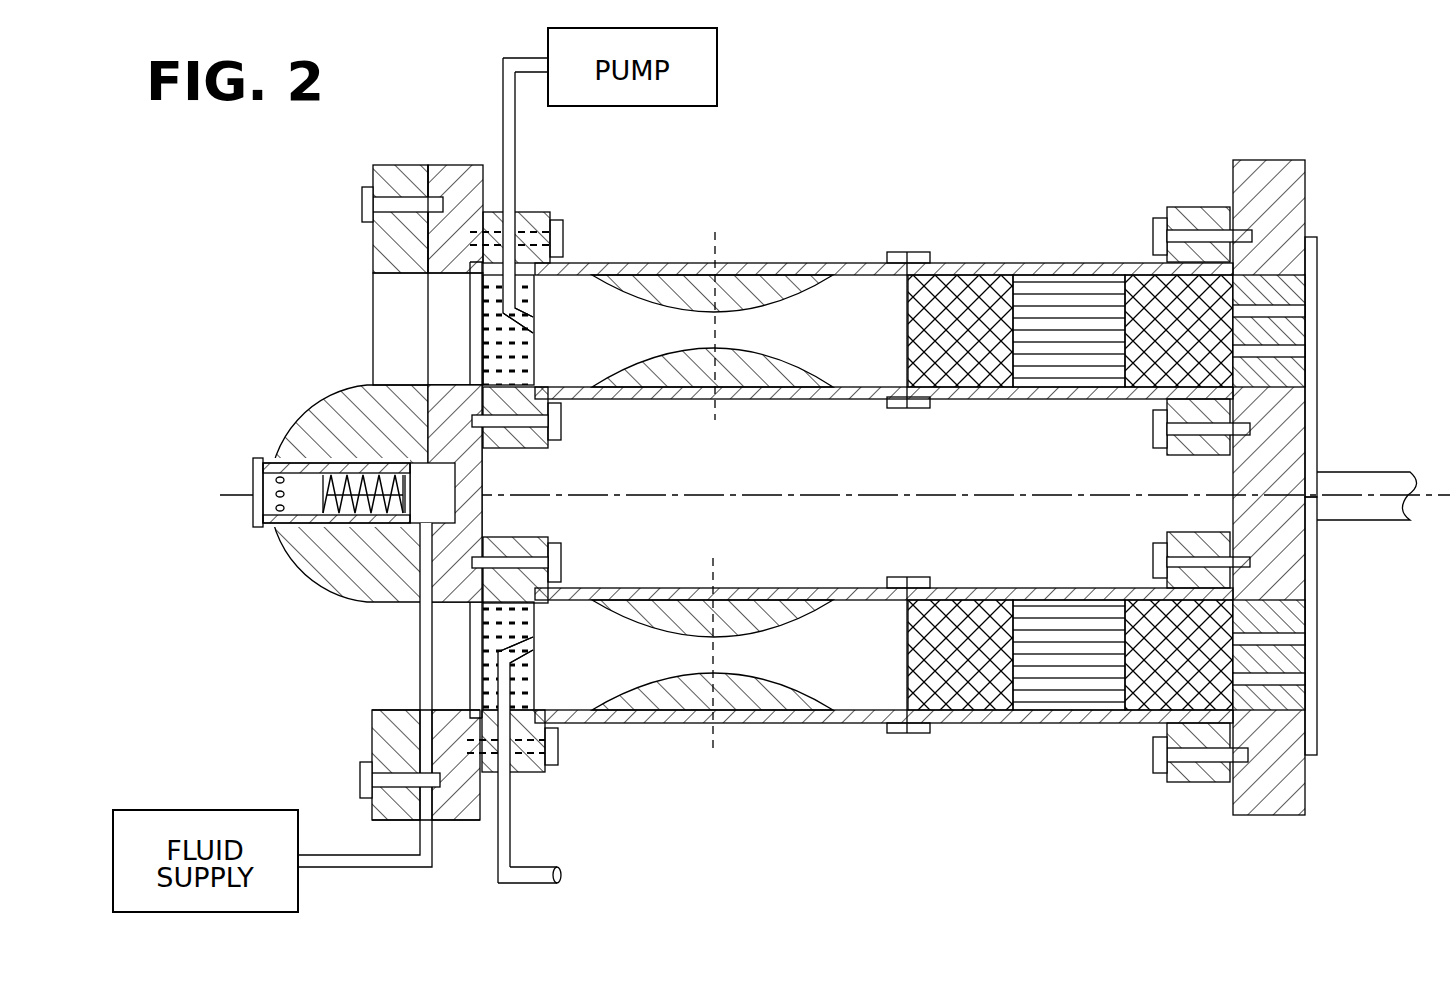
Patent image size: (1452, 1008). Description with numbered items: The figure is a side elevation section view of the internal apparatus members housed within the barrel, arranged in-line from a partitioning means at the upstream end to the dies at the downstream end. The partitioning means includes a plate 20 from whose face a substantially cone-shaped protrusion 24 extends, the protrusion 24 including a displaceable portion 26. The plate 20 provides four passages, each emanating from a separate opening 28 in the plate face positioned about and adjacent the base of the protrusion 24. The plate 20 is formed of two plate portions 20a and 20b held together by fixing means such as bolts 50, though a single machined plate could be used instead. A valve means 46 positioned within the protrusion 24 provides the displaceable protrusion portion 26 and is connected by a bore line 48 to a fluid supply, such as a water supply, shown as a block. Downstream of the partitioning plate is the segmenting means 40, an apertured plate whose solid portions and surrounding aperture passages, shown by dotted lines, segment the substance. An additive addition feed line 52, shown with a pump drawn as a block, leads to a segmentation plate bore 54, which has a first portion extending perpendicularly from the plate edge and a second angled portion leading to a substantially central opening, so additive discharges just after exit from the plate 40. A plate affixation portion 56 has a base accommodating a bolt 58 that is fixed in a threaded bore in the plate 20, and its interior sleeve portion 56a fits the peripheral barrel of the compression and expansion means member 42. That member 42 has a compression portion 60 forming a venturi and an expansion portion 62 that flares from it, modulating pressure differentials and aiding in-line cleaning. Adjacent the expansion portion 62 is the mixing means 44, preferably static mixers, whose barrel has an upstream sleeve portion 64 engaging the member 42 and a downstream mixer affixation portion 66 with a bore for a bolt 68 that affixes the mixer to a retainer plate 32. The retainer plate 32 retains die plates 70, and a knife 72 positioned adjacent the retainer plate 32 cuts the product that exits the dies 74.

The plate 20 is at (372, 712).
The plate portion 20a is at (410, 162).
The plate portion 20b is at (460, 162).
The cone-shaped protrusion 24 is at (313, 548).
The displaceable portion 26 is at (253, 507).
The opening 28 is at (378, 332).
The retainer plate 32 is at (1280, 815).
The segmenting means 40 is at (545, 289).
The compression and expansion means member 42 is at (813, 242).
The mixing means 44 is at (998, 243).
The valve means 46 is at (278, 448).
The bore line 48 is at (430, 837).
The bolts 50 is at (362, 197).
The additive addition feed line 52 is at (507, 81).
The segmentation plate bore 54 is at (517, 315).
The plate affixation portion 56 is at (522, 775).
The interior sleeve portion 56a is at (537, 708).
The bolt 58 is at (562, 748).
The compression portion 60 is at (685, 703).
The expansion portion 62 is at (770, 700).
The sleeve portion 64 is at (832, 588).
The mixer affixation portion 66 is at (1183, 782).
The bolt 68 is at (1150, 750).
The die plates 70 is at (1297, 288).
The knife 72 is at (1315, 705).
The dies 74 is at (1293, 313).